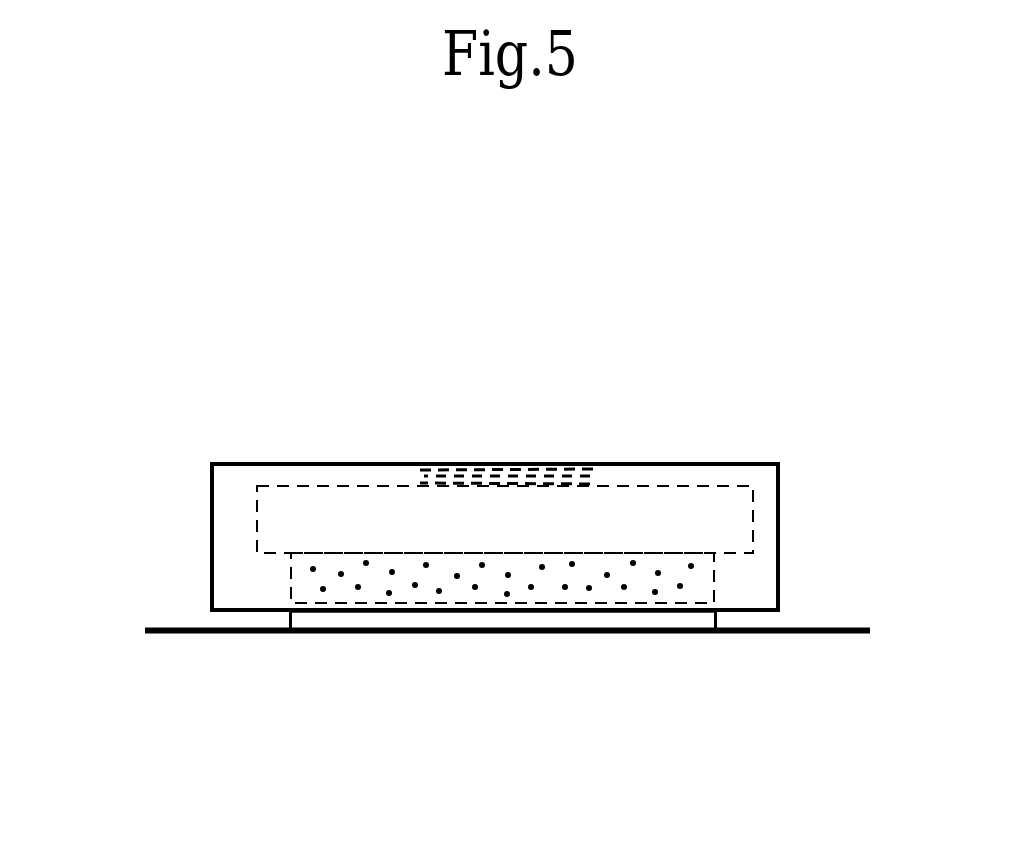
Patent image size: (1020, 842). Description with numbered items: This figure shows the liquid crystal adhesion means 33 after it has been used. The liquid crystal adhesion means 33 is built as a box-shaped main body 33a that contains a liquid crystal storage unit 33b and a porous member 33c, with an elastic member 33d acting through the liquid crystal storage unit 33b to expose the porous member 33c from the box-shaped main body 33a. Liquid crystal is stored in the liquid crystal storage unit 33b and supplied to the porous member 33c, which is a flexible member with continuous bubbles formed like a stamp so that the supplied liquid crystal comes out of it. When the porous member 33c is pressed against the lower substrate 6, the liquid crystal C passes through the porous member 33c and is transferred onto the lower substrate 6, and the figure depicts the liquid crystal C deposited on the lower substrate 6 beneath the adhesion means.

The liquid crystal adhesion means 33 is at (186, 506).
The box-shaped main body 33a is at (781, 471).
The liquid crystal storage unit 33b is at (754, 518).
The porous member 33c is at (716, 596).
The elastic member 33d is at (560, 462).
The liquid crystal C is at (352, 620).
The lower substrate 6 is at (765, 635).